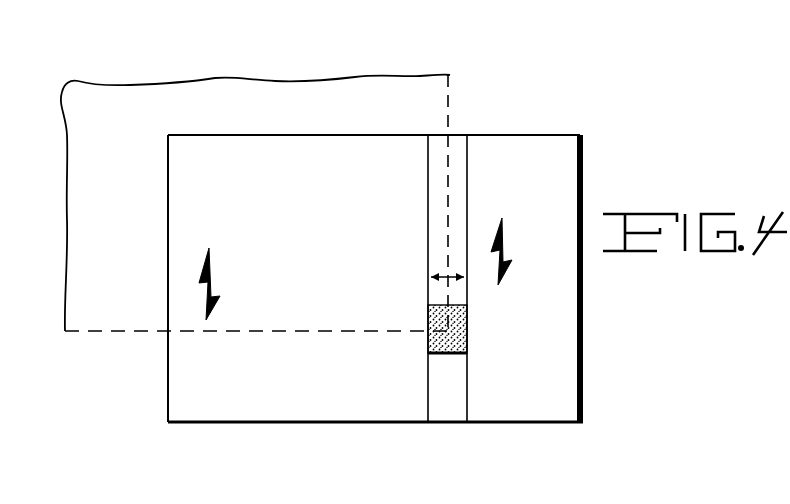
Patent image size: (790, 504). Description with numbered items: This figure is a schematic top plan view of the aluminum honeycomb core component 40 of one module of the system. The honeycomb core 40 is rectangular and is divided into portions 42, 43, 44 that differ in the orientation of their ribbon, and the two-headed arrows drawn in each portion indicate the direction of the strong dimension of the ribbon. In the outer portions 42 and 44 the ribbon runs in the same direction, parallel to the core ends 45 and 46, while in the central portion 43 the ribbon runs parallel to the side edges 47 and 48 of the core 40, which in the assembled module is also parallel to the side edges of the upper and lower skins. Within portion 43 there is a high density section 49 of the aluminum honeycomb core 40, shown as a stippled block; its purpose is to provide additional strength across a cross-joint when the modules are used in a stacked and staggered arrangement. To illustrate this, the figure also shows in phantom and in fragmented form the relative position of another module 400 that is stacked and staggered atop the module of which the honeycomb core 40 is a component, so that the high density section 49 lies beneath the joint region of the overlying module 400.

The another module 400 is at (68, 200).
The aluminum honeycomb core component 40 is at (290, 150).
The portion 42 is at (572, 158).
The portion 43 is at (459, 147).
The portion 44 is at (199, 186).
The core end 45 is at (170, 353).
The core end 46 is at (583, 325).
The side edge 47 is at (270, 423).
The side edge 48 is at (383, 135).
The high density section 49 is at (462, 337).